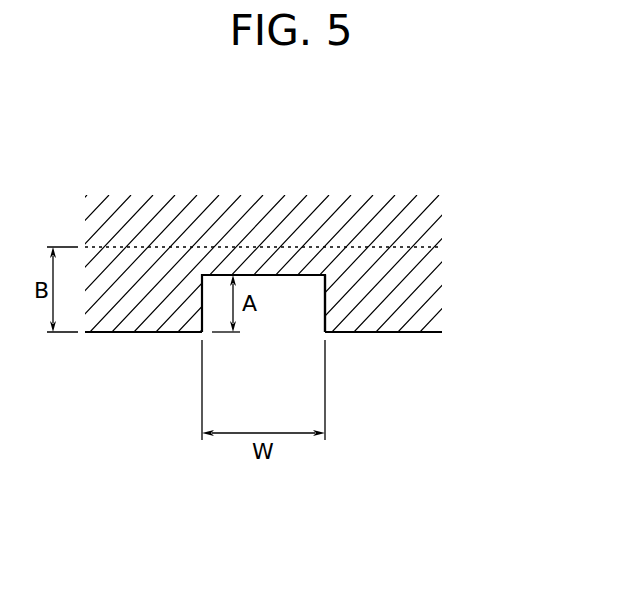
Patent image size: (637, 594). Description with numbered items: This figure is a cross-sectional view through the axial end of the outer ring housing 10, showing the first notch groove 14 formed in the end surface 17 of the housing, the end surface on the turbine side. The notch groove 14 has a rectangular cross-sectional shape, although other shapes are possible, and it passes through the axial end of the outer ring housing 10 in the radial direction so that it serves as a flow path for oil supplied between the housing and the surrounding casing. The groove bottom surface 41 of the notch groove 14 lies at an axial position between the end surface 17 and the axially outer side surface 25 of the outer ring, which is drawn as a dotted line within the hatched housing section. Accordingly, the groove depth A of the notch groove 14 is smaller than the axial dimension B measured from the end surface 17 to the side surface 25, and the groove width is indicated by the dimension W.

The outer ring housing 10 is at (403, 331).
The end surface 17 is at (127, 334).
The groove bottom surface 41 is at (272, 277).
The notch groove 14 is at (291, 294).
The axially outer side surface 25 is at (402, 255).